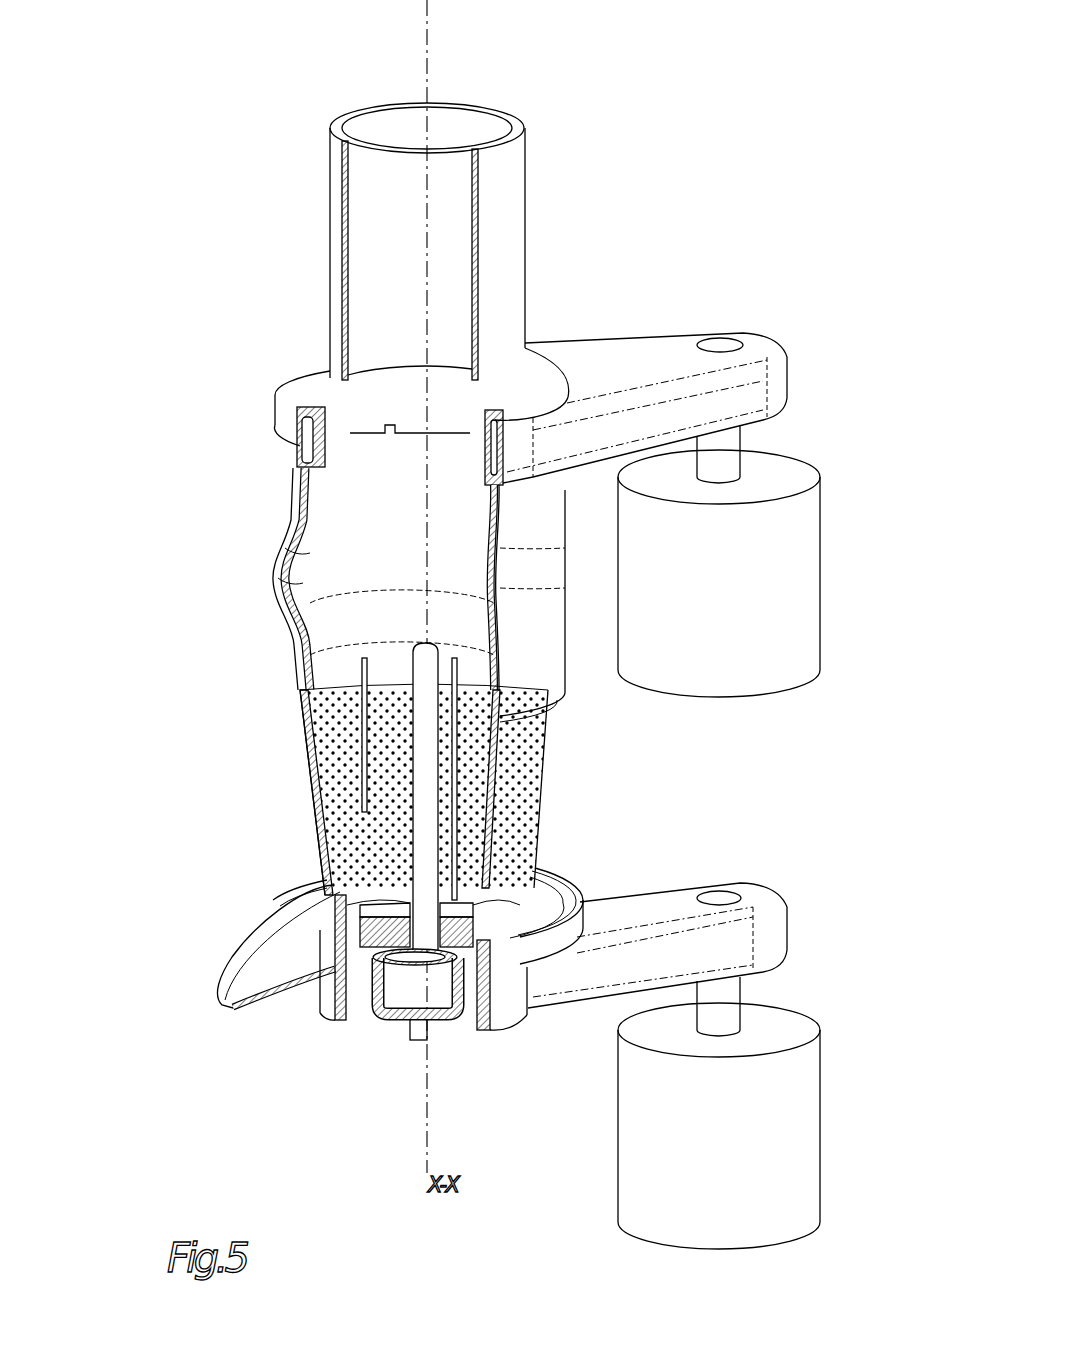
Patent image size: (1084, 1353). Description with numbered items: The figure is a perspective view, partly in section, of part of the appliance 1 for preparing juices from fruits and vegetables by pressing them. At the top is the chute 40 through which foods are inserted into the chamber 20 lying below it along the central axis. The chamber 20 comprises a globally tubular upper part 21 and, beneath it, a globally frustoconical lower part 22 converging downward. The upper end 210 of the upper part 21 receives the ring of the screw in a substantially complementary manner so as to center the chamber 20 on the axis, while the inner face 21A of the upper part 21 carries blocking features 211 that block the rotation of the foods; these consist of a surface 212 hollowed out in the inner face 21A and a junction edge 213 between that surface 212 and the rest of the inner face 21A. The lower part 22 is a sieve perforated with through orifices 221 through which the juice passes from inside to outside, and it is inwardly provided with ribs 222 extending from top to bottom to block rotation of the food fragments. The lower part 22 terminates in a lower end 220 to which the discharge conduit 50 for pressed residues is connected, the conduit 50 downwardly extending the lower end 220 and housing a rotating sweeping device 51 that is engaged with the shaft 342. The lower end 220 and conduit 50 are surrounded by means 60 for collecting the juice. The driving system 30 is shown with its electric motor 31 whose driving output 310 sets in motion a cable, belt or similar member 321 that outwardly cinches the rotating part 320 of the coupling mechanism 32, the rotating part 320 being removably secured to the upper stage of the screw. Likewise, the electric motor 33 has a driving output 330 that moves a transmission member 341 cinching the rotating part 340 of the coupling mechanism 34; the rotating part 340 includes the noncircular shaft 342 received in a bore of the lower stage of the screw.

The appliance 1 is at (300, 135).
The chute 40 is at (318, 243).
The coupling mechanism 32 is at (339, 416).
The rotating part 320 is at (282, 394).
The cable, belt or similar member 321 is at (297, 450).
The driving output 310 is at (723, 443).
The electric motor 31 is at (770, 562).
The driving system 30 is at (709, 791).
The driving output 330 is at (742, 988).
The electric motor 33 is at (770, 1150).
The chamber 20 is at (377, 754).
The upper part 21 is at (325, 595).
The upper end 210 is at (300, 485).
The inner face 21A is at (402, 576).
The blocking features 211 is at (197, 558).
The junction edge 213 is at (300, 548).
The surface 212 is at (295, 578).
The lower part 22 is at (396, 841).
The ribs 222 is at (365, 722).
The through orifices 221 is at (548, 745).
The shaft 342 is at (438, 825).
The rotating sweeping device 51 is at (340, 885).
The lower end 220 is at (325, 905).
The means for collecting the juice 60 is at (208, 1010).
The discharge conduit 50 is at (325, 1017).
The coupling mechanism 34 is at (363, 1049).
The transmission member 341 is at (392, 1002).
The rotating part 340 is at (413, 1000).